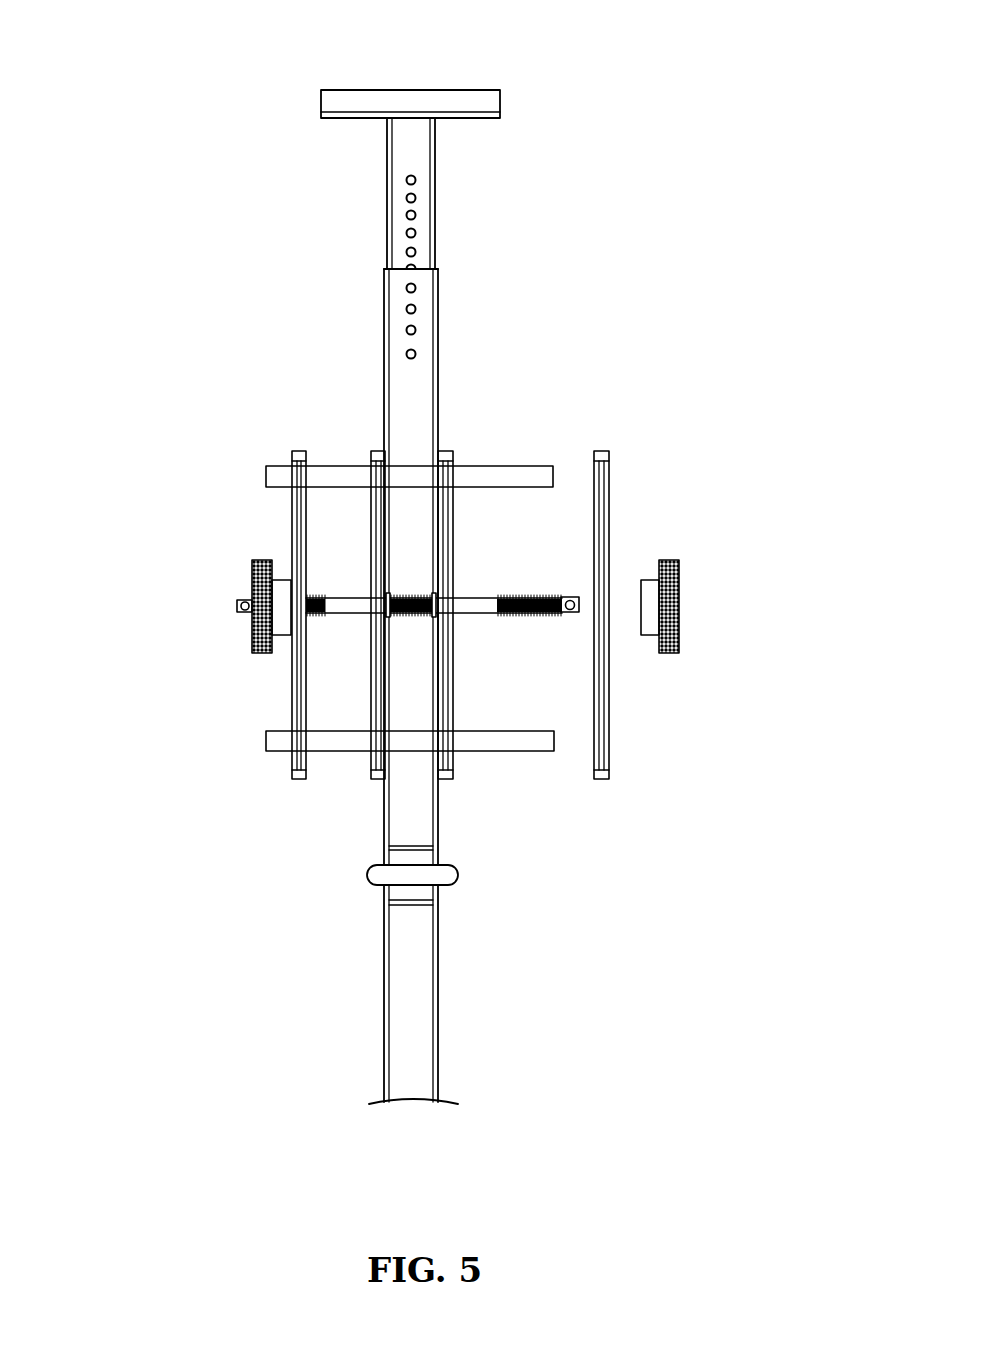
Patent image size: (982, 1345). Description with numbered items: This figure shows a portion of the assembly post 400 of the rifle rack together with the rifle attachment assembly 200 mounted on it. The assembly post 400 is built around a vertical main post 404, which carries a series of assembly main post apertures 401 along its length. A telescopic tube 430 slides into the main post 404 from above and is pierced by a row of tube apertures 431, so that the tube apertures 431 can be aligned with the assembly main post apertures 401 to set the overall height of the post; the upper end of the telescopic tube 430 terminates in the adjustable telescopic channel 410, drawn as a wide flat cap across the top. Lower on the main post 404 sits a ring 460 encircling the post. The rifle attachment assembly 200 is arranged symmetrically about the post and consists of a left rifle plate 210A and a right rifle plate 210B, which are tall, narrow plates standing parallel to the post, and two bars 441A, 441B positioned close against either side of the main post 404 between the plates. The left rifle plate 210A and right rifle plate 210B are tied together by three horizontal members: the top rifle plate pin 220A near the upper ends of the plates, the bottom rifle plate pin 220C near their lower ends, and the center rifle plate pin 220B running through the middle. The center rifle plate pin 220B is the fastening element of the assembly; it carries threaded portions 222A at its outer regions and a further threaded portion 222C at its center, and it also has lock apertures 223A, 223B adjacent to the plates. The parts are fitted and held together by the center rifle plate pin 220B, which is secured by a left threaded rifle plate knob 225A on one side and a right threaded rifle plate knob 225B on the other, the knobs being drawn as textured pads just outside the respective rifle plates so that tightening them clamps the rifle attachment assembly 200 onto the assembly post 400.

The assembly post 400 is at (520, 353).
The adjustable telescopic channel 410 is at (442, 112).
The telescopic tube 430 is at (377, 192).
The tube apertures 431 is at (413, 213).
The assembly main post apertures 401 is at (413, 307).
The main post 404 is at (408, 1001).
The ring 460 is at (452, 876).
The first mounting bar 441A is at (376, 459).
The second mounting bar 441B is at (447, 454).
The rifle attachment assembly 200 is at (640, 708).
The top rifle plate pin 220A is at (343, 466).
The center rifle plate pin 220B is at (352, 607).
The bottom rifle plate pin 220C is at (323, 745).
The left rifle plate 210A is at (302, 525).
The right rifle plate 210B is at (609, 520).
The threaded portion 222A is at (320, 597).
The threaded portion 222C is at (403, 597).
The lock aperture 223A is at (242, 603).
The lock aperture 223B is at (572, 608).
The left threaded rifle plate knob 225A is at (252, 623).
The right threaded rifle plate knob 225B is at (680, 604).